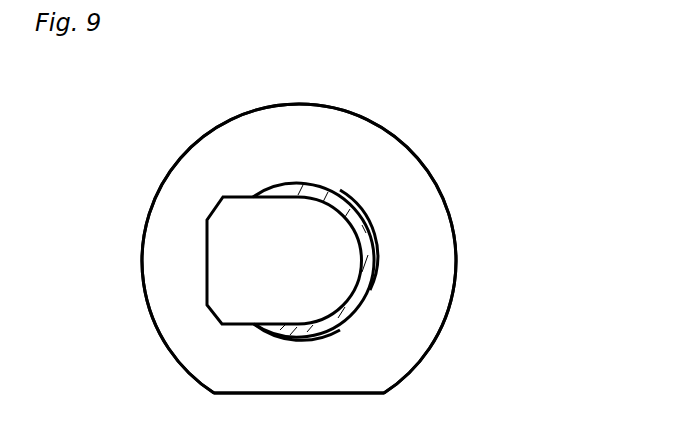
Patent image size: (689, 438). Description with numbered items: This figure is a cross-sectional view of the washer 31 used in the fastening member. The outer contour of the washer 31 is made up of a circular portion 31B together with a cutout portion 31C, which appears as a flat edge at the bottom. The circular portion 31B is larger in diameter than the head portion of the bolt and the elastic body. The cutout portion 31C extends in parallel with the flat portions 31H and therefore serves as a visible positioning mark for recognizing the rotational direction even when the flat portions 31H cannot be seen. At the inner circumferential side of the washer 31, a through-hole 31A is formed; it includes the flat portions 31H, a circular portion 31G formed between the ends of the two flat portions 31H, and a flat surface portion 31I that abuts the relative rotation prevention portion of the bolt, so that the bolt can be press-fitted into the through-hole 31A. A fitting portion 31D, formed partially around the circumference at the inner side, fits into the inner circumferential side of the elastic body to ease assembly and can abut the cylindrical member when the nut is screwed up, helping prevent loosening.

The washer 31 is at (166, 135).
The through-hole 31A is at (335, 260).
The circular portion 31B is at (158, 174).
The cutout portion 31C is at (255, 393).
The fitting portion 31D is at (365, 216).
The circular portion 31G is at (372, 278).
The flat portions 31H is at (327, 337).
The flat surface portion 31I is at (207, 262).